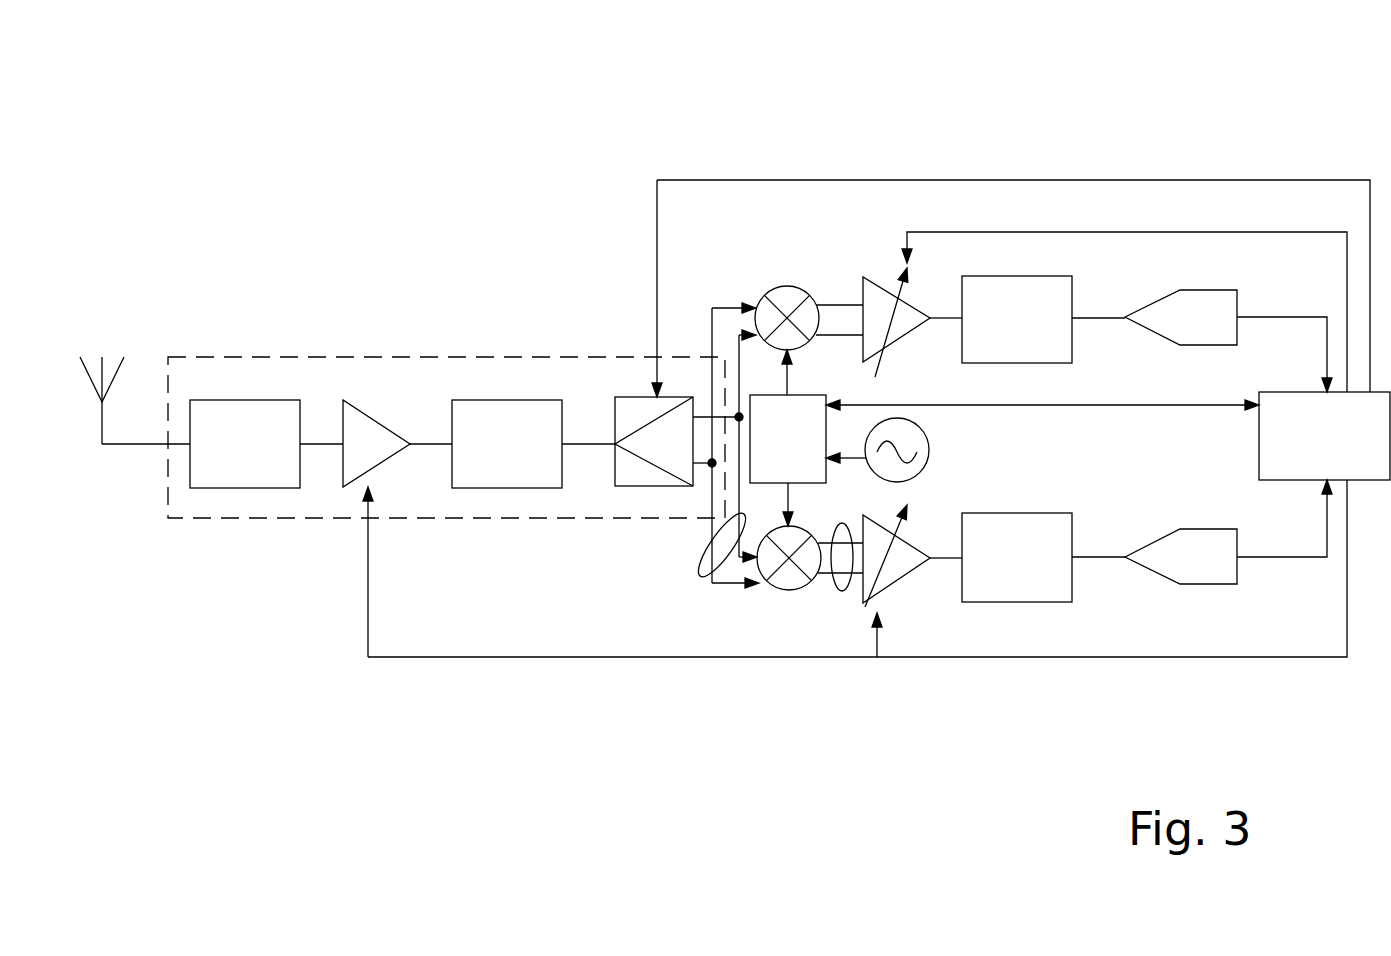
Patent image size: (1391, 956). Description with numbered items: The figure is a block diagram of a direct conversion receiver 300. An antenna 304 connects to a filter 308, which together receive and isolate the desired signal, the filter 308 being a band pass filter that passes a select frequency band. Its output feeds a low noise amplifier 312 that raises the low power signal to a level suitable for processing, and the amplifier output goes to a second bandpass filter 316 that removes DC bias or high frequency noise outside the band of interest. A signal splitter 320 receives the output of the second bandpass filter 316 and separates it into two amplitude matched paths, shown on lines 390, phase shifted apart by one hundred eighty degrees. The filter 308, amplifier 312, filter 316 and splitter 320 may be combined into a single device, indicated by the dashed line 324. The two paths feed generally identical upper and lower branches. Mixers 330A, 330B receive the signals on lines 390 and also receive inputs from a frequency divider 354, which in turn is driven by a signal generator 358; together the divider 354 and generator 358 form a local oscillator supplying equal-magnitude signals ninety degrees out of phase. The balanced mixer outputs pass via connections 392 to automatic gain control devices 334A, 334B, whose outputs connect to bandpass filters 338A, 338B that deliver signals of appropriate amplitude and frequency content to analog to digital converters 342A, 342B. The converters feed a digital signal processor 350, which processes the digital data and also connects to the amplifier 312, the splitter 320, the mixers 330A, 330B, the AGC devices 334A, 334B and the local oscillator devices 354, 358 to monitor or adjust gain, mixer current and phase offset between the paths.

The receiver 300 is at (612, 146).
The antenna 304 is at (115, 338).
The filter 308 is at (245, 400).
The low noise amplifier 312 is at (353, 400).
The second bandpass filter 316 is at (481, 400).
The signal splitter 320 is at (628, 397).
The dashed line 324 is at (240, 530).
The mixer 330A is at (781, 287).
The mixer 330B is at (788, 592).
The automatic gain control device 334A is at (878, 286).
The automatic gain control device 334B is at (902, 605).
The bandpass filter 338A is at (1017, 276).
The bandpass filter 338B is at (1017, 602).
The analog to digital converter 342A is at (1212, 290).
The analog to digital converter 342B is at (1205, 584).
The digital signal processor 350 is at (1108, 436).
The frequency divider 354 is at (788, 438).
The signal generator 358 is at (930, 447).
The lines 390 is at (697, 566).
The connections 392 is at (838, 590).